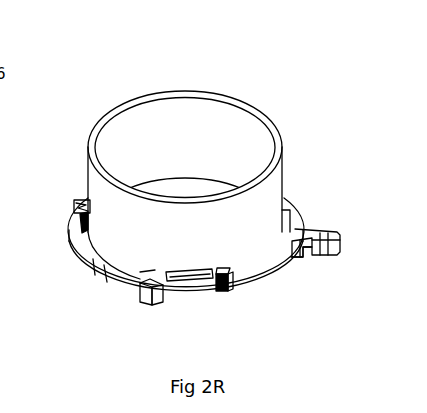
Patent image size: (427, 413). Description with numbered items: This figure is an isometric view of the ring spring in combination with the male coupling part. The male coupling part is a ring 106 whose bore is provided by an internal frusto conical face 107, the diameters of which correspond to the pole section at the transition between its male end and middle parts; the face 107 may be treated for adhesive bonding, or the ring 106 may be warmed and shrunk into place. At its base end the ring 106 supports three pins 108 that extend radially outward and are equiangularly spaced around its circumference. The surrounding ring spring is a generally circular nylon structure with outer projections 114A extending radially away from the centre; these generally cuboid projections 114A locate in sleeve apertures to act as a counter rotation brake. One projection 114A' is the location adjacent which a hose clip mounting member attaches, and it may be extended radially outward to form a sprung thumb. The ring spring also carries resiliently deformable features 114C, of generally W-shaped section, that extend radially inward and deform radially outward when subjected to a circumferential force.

The ring 106 is at (198, 132).
The internal frusto conical face 107 is at (170, 160).
The pins 108 is at (176, 305).
The outer projections 114A is at (112, 308).
The projection 114A' is at (340, 222).
The resiliently deformable features 114C is at (166, 271).